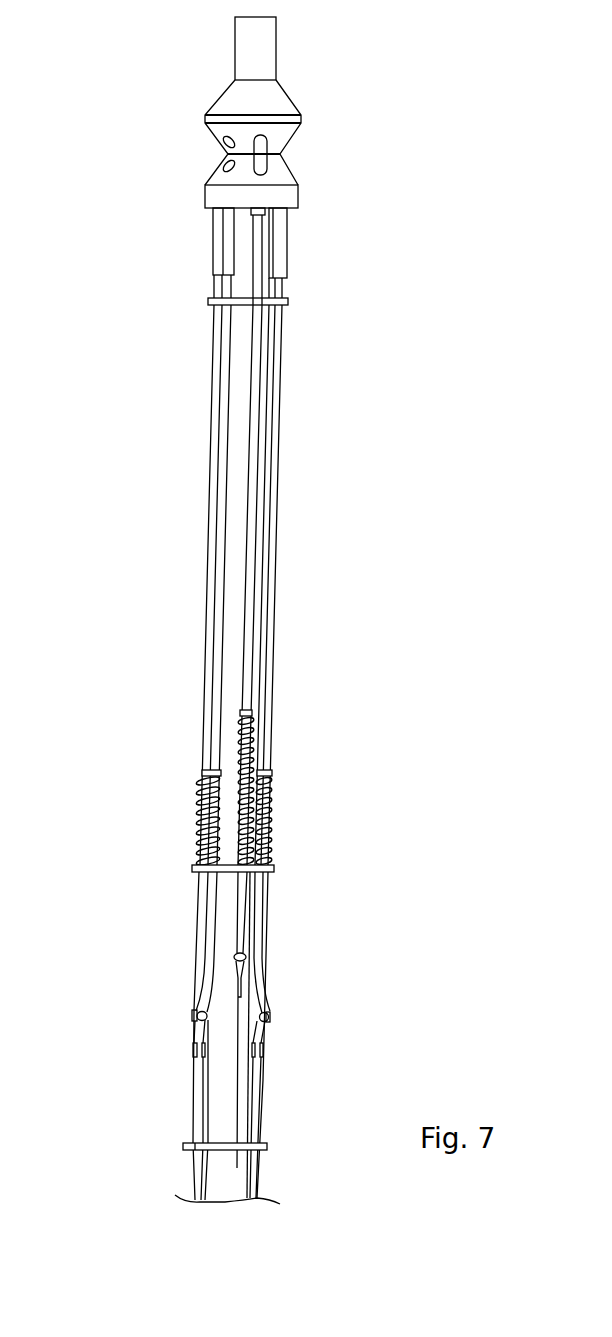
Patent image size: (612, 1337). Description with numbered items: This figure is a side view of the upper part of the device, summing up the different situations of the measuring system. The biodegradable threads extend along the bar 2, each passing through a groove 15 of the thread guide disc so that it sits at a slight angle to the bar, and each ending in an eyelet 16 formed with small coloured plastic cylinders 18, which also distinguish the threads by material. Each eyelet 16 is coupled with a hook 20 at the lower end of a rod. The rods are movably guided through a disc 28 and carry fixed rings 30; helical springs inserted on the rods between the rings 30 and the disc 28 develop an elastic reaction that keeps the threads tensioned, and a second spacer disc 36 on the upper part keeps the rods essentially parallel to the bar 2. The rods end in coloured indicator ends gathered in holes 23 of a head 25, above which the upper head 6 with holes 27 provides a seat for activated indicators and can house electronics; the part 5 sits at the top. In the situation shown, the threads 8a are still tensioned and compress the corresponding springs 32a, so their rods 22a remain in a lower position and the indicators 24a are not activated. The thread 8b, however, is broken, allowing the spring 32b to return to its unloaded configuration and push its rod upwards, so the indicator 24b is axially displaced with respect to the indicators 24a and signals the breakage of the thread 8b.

The bar 2 is at (225, 1188).
The upper shaft 5 is at (263, 45).
The upper head 6 is at (288, 118).
The tensioned threads 8a is at (262, 1120).
The broken thread 8b is at (238, 1083).
The groove 15 is at (187, 1143).
The eyelet 16 is at (265, 1040).
The small coloured plastic cylinders 18 is at (192, 1048).
The hook 20 is at (208, 989).
The rods connected to unbroken threads 22a is at (253, 355).
The holes of the head 23 is at (224, 164).
The indicators not activated 24a is at (280, 237).
The activated indicator 24b is at (268, 157).
The head 25 is at (230, 193).
The holes of the upper head 27 is at (224, 140).
The disc 28 is at (192, 866).
The fixed rings 30 is at (202, 772).
The compressed springs 32a is at (272, 807).
The unloaded spring 32b is at (250, 733).
The second spacer disc 36 is at (288, 302).